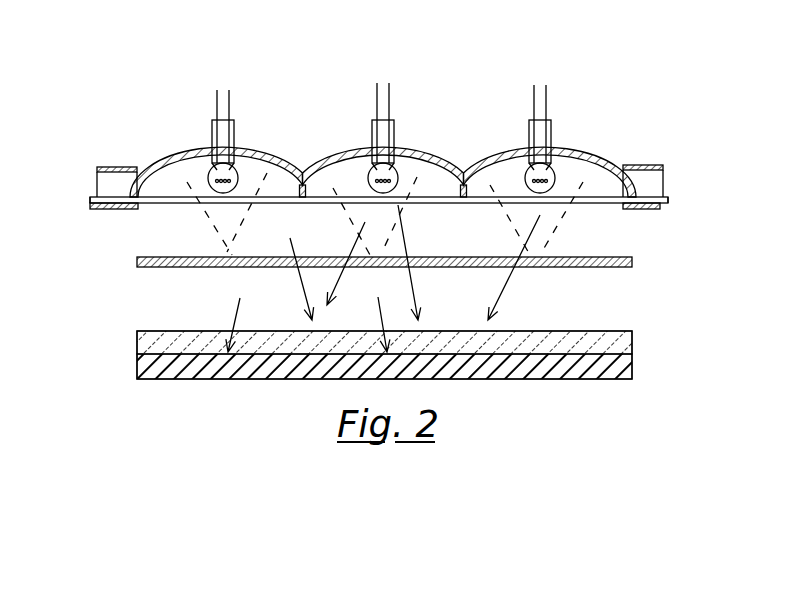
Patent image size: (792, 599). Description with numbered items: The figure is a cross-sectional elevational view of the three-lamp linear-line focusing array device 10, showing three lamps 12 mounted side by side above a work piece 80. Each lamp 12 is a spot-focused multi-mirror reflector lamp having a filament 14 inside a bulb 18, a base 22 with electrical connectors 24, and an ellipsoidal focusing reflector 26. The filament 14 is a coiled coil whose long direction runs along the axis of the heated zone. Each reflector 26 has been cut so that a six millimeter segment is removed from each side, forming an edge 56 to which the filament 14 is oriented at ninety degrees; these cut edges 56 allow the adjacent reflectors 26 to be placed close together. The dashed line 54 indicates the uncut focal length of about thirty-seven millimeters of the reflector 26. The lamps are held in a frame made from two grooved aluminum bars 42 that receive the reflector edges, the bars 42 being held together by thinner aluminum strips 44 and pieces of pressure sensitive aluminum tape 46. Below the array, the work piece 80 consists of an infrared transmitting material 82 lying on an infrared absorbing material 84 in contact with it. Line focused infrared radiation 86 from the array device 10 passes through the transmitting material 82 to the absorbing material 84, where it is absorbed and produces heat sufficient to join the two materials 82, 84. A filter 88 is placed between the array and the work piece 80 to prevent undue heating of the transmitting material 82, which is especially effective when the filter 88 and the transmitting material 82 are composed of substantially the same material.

The three-lamp linear-line focusing array device 10 is at (431, 102).
The lamp 12 is at (571, 130).
The filament 14 is at (570, 165).
The bulb 18 is at (250, 152).
The base 22 is at (212, 140).
The electrical connectors 24 is at (229, 94).
The reflector 26 is at (403, 150).
The aluminum bar 42 is at (97, 187).
The aluminum strip 44 is at (128, 165).
The pressure sensitive aluminum tape 46 is at (97, 171).
The focal length 54 is at (217, 225).
The edge 56 is at (320, 167).
The work piece 80 is at (650, 326).
The infrared transmitting material 82 is at (528, 328).
The infrared absorbing material 84 is at (497, 368).
The line focused infrared radiation 86 is at (293, 280).
The filter 88 is at (167, 267).